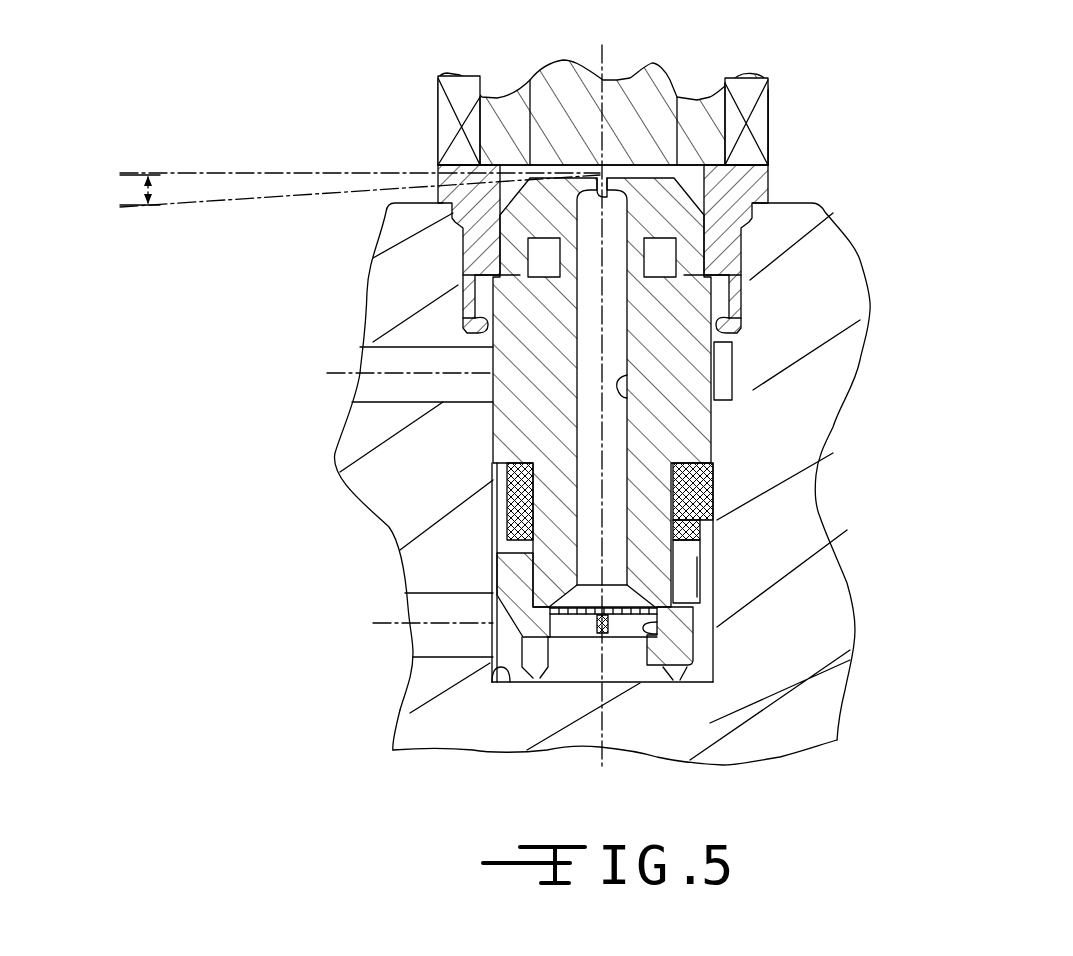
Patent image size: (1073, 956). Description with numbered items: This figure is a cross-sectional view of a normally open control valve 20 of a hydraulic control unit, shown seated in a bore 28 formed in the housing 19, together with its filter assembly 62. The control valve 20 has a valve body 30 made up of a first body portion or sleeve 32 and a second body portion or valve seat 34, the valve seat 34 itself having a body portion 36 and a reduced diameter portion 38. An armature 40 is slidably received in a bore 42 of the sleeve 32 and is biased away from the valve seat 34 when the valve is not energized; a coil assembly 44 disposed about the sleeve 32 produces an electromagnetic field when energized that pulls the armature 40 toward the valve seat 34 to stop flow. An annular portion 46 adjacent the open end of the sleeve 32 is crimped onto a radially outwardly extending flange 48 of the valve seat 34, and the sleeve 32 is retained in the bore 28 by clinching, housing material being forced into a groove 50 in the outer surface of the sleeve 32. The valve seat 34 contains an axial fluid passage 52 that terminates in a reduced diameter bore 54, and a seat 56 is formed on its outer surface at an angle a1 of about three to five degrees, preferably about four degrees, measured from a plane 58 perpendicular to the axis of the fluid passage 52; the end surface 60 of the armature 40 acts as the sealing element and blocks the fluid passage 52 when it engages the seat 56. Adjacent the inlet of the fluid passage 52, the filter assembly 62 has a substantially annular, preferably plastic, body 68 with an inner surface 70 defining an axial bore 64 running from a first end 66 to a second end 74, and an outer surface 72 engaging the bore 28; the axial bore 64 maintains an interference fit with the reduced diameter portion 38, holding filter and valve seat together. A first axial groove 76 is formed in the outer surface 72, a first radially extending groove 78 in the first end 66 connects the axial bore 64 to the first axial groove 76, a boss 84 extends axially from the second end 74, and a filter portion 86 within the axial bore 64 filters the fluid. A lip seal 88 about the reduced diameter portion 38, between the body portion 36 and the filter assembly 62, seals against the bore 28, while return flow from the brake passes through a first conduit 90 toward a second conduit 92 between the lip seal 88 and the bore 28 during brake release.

The housing 19 is at (827, 718).
The control valve 20 is at (390, 74).
The bore 28 is at (490, 694).
The valve body 30 is at (458, 266).
The sleeve 32 is at (462, 297).
The valve seat 34 is at (488, 443).
The body portion 36 is at (493, 450).
The reduced diameter portion 38 is at (493, 555).
The armature 40 is at (662, 100).
The bore 42 is at (557, 63).
The coil assembly 44 is at (770, 137).
The annular portion 46 is at (750, 323).
The flange 48 is at (720, 305).
The groove 50 is at (747, 232).
The fluid passage 52 is at (632, 392).
The reduced diameter bore 54 is at (617, 198).
The seat 56 is at (633, 167).
The plane 58 is at (312, 172).
The end surface 60 is at (634, 92).
The filter assembly 62 is at (714, 652).
The axial bore 64 is at (713, 592).
The first end 66 is at (713, 537).
The annular body 68 is at (497, 585).
The inner surface 70 is at (713, 622).
The outer surface 72 is at (713, 570).
The second end 74 is at (647, 682).
The first axial groove 76 is at (713, 557).
The first radially extending groove 78 is at (677, 567).
The boss 84 is at (670, 683).
The filter portion 86 is at (567, 682).
The lip seal 88 is at (493, 503).
The first conduit 90 is at (350, 378).
The second conduit 92 is at (490, 650).
The angle a1 is at (146, 189).